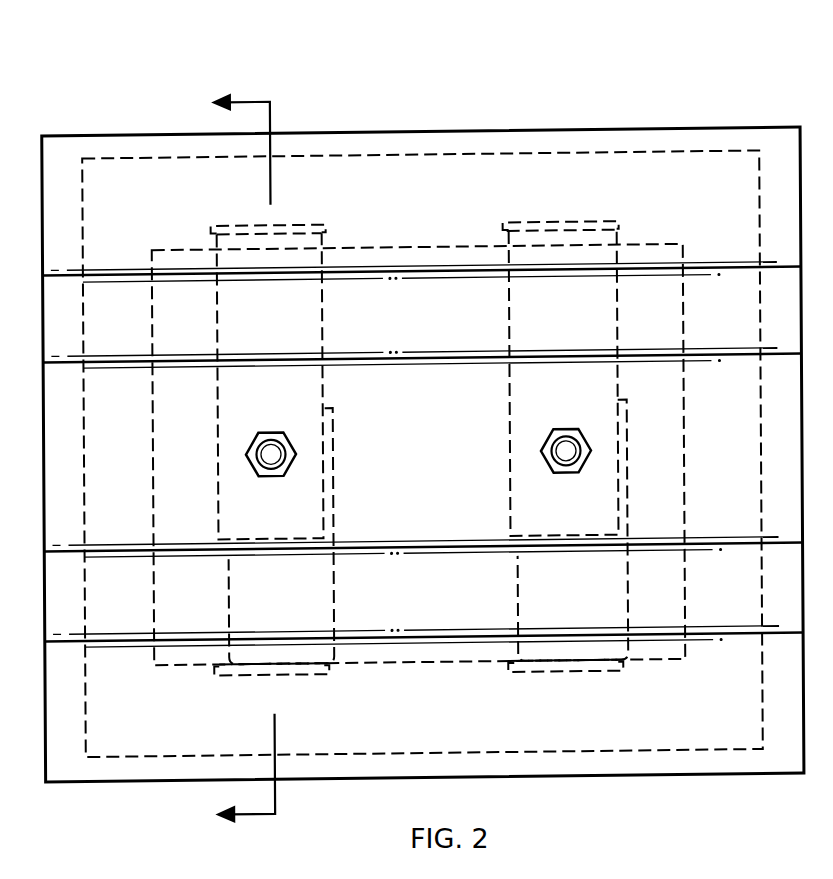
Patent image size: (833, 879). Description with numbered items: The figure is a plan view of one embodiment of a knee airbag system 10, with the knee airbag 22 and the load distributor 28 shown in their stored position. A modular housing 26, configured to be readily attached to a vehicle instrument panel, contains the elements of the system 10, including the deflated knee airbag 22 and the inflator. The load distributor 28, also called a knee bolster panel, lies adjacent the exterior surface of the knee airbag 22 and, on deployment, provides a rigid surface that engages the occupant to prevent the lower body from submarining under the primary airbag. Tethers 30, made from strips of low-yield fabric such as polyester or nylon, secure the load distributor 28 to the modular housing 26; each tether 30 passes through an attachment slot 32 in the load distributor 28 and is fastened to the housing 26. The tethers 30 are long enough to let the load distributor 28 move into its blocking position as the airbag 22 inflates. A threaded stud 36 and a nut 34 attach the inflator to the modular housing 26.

The knee airbag system 10 is at (722, 112).
The knee airbag 22 is at (418, 268).
The modular housing 26 is at (780, 137).
The load distributor 28 is at (722, 237).
The tether 30 is at (299, 316).
The attachment slot 32 is at (298, 226).
The nut 34 is at (290, 441).
The threaded stud 36 is at (271, 452).